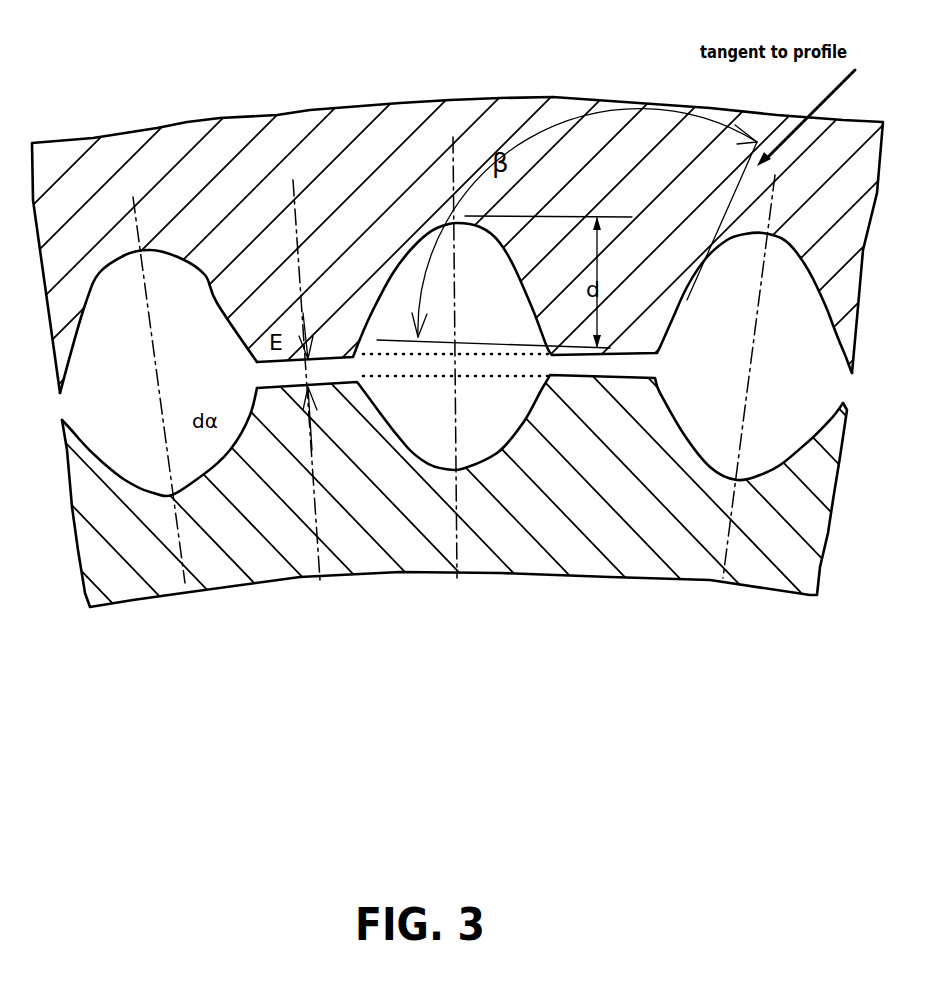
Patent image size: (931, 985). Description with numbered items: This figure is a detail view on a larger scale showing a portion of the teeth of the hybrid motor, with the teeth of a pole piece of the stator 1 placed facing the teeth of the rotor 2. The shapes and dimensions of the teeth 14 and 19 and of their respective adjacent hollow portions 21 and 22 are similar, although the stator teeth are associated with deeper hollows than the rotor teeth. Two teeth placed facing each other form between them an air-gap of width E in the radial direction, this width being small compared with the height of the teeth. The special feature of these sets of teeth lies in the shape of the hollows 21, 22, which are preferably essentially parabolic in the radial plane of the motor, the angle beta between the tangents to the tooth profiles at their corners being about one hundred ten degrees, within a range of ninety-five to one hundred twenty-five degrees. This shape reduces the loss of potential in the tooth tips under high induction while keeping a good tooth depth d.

The stator 1 is at (445, 98).
The rotor 2 is at (520, 590).
The teeth 14 is at (340, 365).
The teeth 19 is at (340, 365).
The hollow portion 21 is at (150, 250).
The hollow portion 22 is at (187, 493).